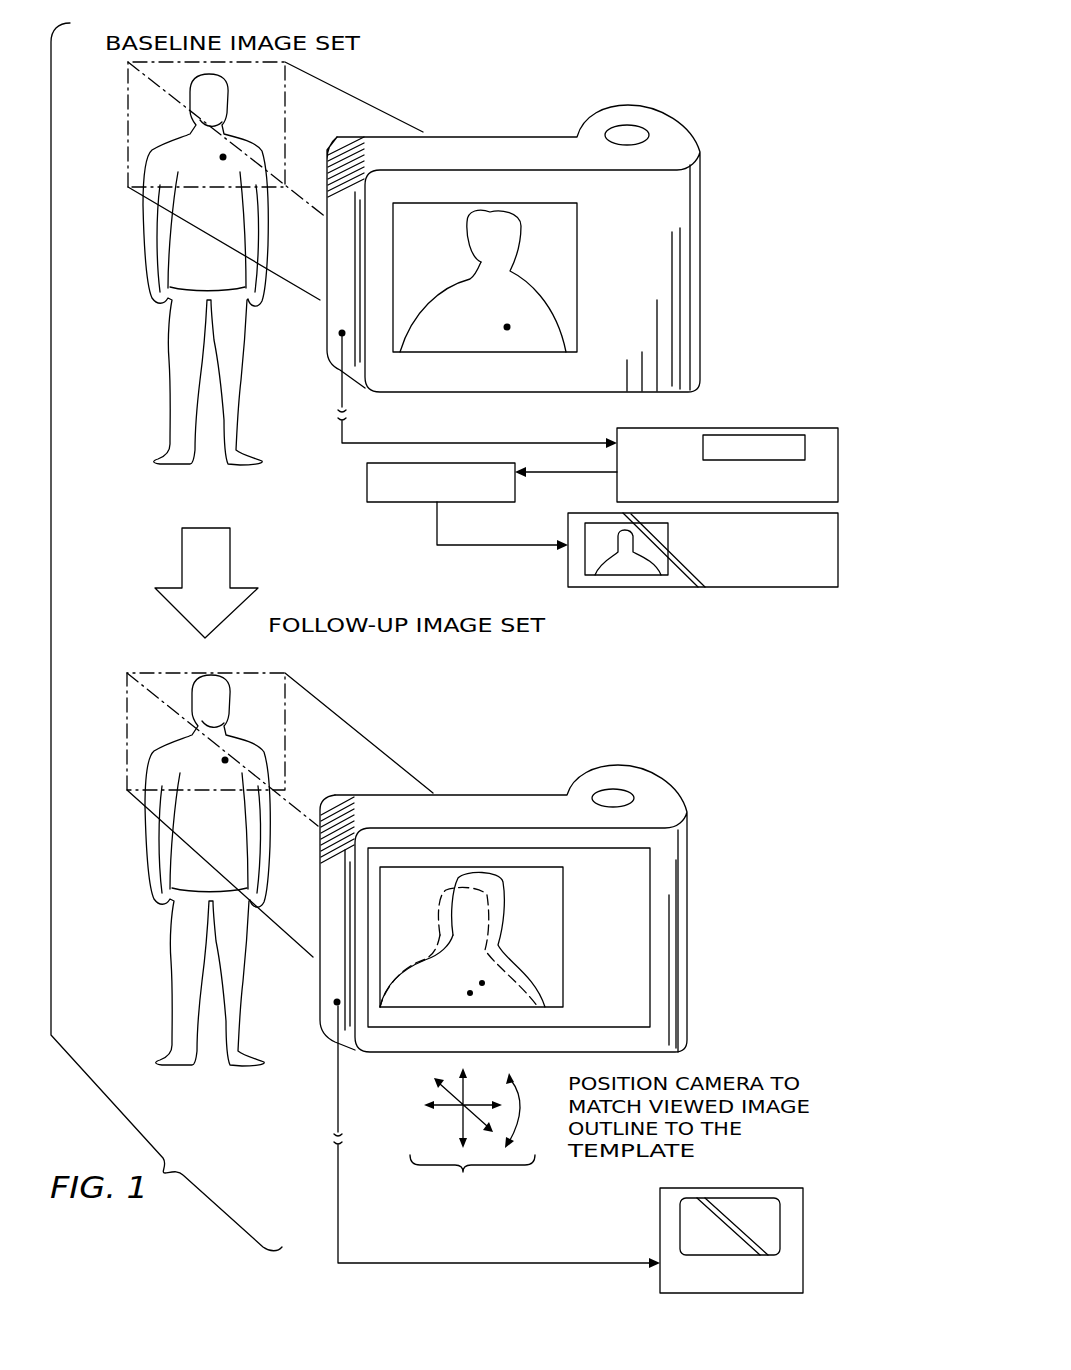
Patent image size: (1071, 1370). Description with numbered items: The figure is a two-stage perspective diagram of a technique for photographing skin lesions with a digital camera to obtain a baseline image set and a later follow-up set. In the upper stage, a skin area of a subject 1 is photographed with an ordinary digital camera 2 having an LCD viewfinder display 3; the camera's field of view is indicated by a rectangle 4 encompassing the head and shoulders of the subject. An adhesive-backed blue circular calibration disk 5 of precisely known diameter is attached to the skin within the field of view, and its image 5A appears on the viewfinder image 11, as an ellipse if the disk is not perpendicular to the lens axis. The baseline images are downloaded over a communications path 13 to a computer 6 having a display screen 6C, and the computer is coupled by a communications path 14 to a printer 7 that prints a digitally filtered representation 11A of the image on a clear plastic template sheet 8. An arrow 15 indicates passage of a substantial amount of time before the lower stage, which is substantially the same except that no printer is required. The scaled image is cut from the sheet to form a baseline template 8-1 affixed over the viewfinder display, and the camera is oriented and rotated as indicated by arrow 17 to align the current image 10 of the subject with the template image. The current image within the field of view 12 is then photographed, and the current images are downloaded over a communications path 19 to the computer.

The subject 1 is at (146, 329).
The digital camera 2 is at (499, 125).
The LCD viewfinder display 3 is at (592, 287).
The field of view 4 is at (123, 118).
The calibration disk 5 is at (220, 157).
The image of calibration disk 5A is at (506, 330).
The computer 6 is at (752, 428).
The display screen 6C is at (793, 435).
The printer 7 is at (367, 485).
The clear plastic template sheet 8 is at (725, 604).
The baseline template 8-1 is at (650, 962).
The current image 10 is at (445, 957).
The image 11 is at (518, 240).
The digitally filtered representation 11A is at (668, 572).
The field of view 12 is at (118, 724).
The communications path 13 is at (573, 423).
The communications path 14 is at (577, 474).
The arrow 15 is at (190, 550).
The arrow 17 is at (472, 1140).
The communications path 19 is at (428, 1266).